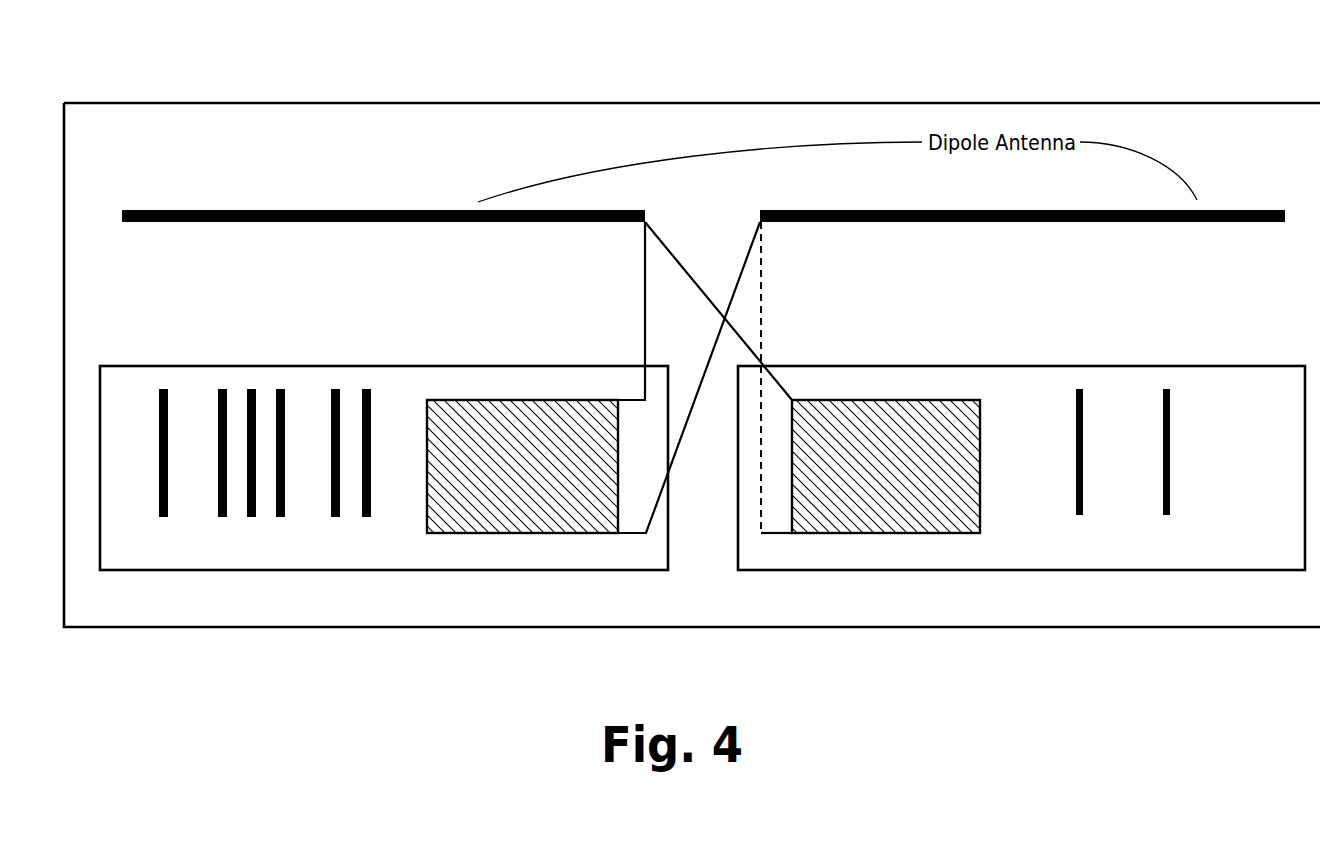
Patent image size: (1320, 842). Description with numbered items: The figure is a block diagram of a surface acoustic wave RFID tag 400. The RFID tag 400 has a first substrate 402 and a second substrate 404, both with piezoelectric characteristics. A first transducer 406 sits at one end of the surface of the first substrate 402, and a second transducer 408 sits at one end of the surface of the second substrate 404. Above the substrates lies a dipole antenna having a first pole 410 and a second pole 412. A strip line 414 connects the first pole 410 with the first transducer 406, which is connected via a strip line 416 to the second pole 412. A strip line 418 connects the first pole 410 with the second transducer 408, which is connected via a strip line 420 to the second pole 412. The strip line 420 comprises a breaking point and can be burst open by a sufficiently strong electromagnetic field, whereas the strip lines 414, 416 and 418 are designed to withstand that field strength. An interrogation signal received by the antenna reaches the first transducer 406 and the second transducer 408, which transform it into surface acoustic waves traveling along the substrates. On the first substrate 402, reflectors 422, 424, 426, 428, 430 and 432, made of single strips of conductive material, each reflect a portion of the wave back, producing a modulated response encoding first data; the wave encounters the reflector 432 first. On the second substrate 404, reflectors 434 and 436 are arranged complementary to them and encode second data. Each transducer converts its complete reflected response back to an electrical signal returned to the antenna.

The RFID tag 400 is at (765, 101).
The first substrate 402 is at (165, 572).
The second substrate 404 is at (930, 365).
The first transducer 406 is at (520, 535).
The second transducer 408 is at (825, 535).
The first pole 410 is at (344, 209).
The second pole 412 is at (1258, 209).
The strip line 414 is at (645, 315).
The strip line 416 is at (743, 257).
The strip line 418 is at (737, 329).
The strip line 420 is at (762, 270).
The reflector 422 is at (157, 404).
The reflector 424 is at (214, 404).
The reflector 426 is at (245, 402).
The reflector 428 is at (290, 400).
The reflector 430 is at (342, 401).
The reflector 432 is at (371, 404).
The reflector 434 is at (1078, 388).
The reflector 436 is at (1168, 388).